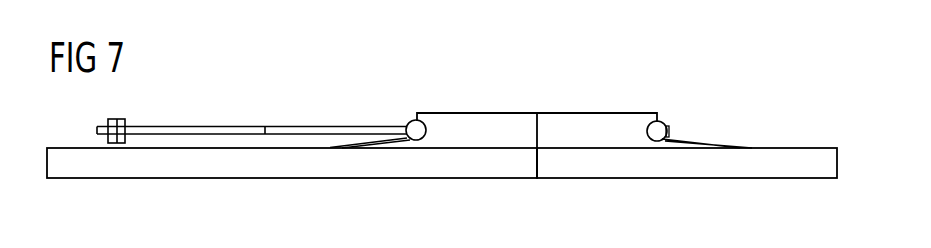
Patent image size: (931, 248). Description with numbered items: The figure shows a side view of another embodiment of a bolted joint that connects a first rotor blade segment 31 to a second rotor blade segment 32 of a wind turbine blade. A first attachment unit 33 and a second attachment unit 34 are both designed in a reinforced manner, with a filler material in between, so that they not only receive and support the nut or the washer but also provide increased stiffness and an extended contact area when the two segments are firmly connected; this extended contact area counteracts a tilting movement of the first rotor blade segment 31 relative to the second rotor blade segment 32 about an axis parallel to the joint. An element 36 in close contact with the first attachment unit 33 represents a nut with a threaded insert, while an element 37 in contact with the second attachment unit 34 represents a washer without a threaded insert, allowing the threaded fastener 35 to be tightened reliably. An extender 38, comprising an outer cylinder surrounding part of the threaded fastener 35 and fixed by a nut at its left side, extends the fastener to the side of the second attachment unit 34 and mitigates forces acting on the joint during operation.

The first rotor blade segment 31 is at (672, 167).
The second rotor blade segment 32 is at (420, 167).
The first attachment unit 33 is at (616, 122).
The second attachment unit 34 is at (454, 122).
The threaded fastener 35 is at (318, 133).
The nut with threaded insert 36 is at (655, 127).
The washer 37 is at (412, 127).
The extender 38 is at (184, 133).